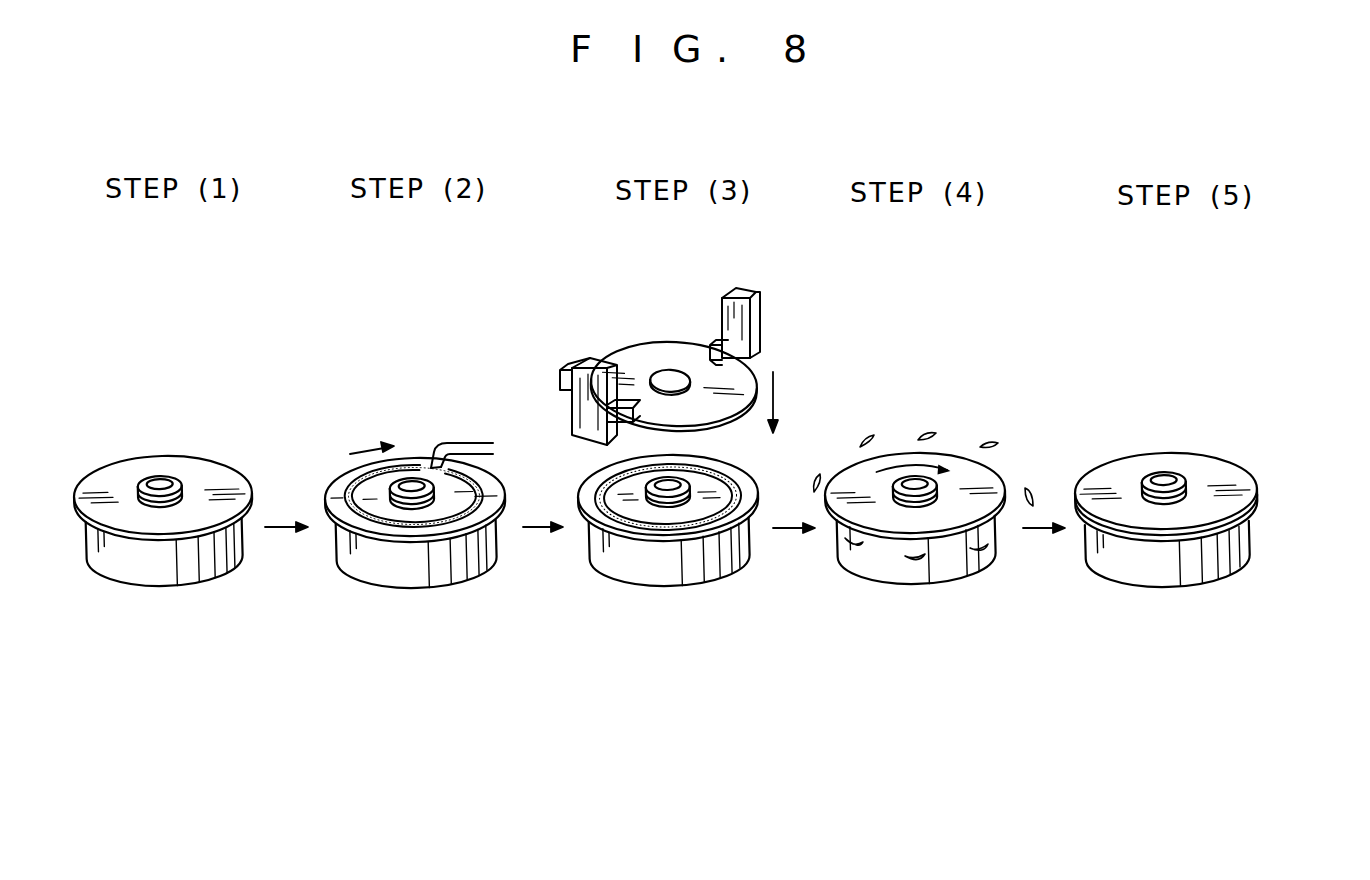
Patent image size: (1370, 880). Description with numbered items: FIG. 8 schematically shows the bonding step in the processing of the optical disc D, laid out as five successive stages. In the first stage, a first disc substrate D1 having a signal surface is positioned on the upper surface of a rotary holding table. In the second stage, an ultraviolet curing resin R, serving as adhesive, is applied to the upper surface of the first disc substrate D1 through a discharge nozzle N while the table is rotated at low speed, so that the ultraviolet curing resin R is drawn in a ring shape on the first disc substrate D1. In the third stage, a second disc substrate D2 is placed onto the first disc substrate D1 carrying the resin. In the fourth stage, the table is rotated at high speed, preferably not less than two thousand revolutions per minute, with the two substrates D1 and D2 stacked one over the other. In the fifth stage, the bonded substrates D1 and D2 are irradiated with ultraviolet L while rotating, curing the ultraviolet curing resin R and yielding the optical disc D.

The first disc substrate D1 is at (196, 458).
The second disc substrate D2 is at (647, 352).
The ultraviolet curing resin R is at (358, 481).
The discharge nozzle N is at (500, 431).
The ultraviolet L is at (1273, 395).
The optical disc D is at (1314, 427).